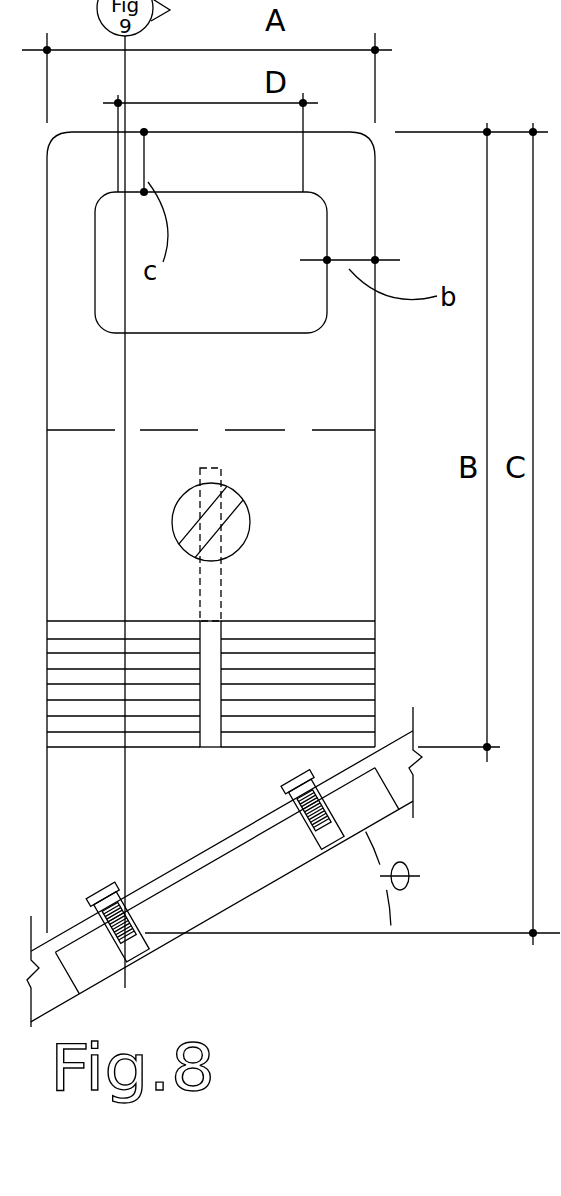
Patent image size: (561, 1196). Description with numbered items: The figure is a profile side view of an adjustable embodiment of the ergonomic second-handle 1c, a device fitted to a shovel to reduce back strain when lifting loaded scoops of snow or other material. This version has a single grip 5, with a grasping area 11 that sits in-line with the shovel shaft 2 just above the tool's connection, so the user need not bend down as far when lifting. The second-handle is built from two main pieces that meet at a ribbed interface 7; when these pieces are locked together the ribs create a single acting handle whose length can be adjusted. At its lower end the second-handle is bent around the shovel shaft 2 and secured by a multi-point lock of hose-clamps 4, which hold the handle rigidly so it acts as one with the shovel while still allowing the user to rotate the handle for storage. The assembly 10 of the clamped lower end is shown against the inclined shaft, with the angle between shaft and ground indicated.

The ergonomic second-handle 1c is at (355, 577).
The shovel shaft 2 is at (237, 883).
The hose-clamps 4 is at (315, 828).
The grip 5 is at (270, 183).
The ribbed interface 7 is at (350, 690).
The clamp plate 10 is at (100, 883).
The grasping area 11 is at (177, 306).